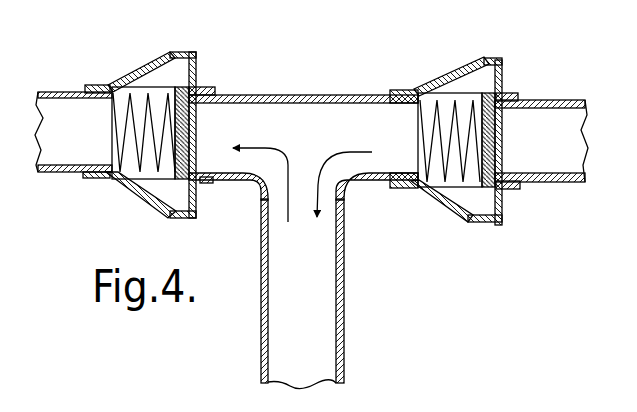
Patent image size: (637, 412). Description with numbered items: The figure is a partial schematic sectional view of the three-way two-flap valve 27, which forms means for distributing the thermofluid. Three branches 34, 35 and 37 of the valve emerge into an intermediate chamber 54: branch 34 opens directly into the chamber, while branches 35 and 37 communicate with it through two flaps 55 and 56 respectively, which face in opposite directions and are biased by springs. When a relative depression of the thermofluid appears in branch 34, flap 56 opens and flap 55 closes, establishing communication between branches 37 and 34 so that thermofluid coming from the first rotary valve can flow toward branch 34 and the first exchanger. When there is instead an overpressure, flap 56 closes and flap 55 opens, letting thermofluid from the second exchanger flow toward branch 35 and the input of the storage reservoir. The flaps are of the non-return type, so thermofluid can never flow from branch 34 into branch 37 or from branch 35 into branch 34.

The three-way two-flap valve 27 is at (326, 94).
The branch 34 is at (339, 280).
The branch 35 is at (56, 173).
The branch 37 is at (555, 100).
The intermediate chamber 54 is at (317, 145).
The flap 55 is at (188, 130).
The flap 56 is at (488, 163).